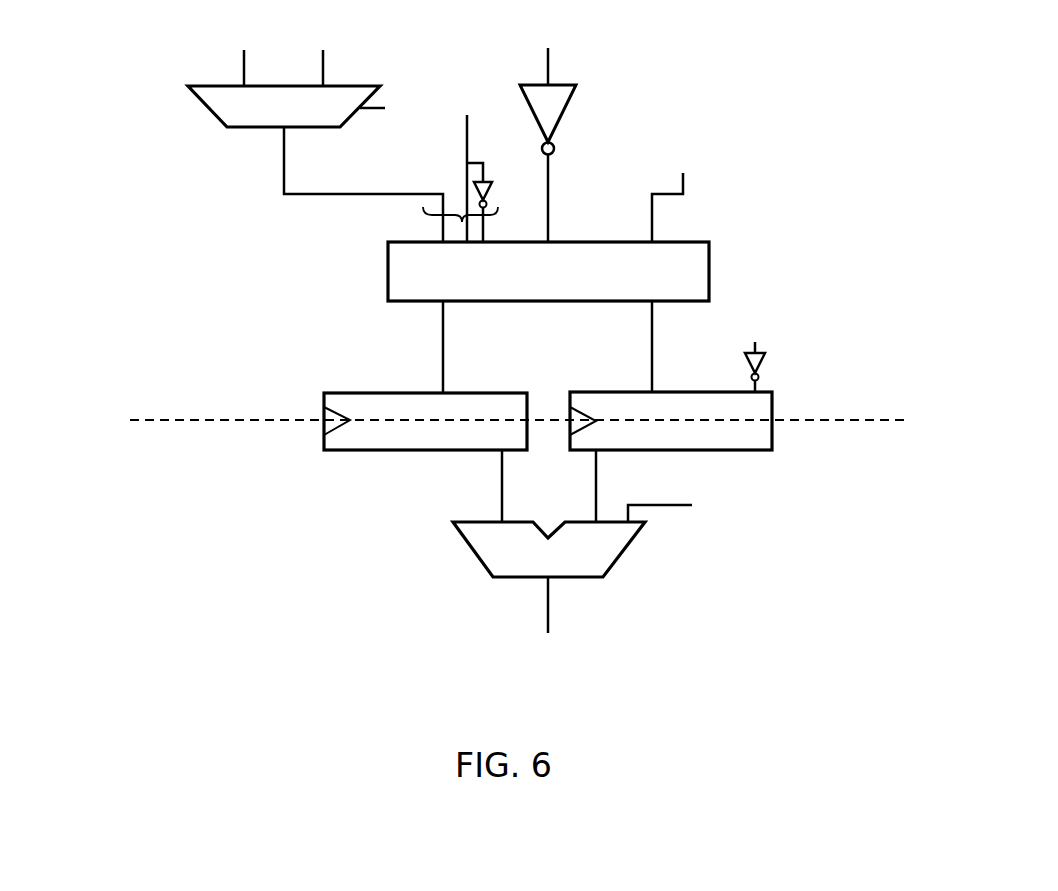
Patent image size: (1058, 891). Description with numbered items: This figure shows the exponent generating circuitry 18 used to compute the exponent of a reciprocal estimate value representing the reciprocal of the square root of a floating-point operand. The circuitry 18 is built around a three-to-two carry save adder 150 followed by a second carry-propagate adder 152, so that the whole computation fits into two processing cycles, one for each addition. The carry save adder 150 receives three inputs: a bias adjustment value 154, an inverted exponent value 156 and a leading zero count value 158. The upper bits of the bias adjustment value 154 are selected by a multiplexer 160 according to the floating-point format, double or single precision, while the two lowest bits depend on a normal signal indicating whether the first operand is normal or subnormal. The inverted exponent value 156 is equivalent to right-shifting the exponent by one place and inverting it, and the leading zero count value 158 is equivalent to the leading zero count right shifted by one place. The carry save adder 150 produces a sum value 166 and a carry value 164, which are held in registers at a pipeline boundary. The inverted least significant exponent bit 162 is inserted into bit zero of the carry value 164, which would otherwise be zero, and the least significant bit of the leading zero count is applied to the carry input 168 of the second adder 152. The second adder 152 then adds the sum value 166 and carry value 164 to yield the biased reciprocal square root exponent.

The exponent generating circuitry 18 is at (157, 477).
The multiplexer 160 is at (205, 109).
The bias adjustment value 154 is at (462, 222).
The inverted exponent value 156 is at (549, 221).
The leading zero count value 158 is at (652, 220).
The 3:2 carry save adder 150 is at (388, 275).
The sum value 166 is at (372, 451).
The carry value 164 is at (735, 451).
The inverted exponent bit zero 162 is at (760, 377).
The second carry-propagate adder 152 is at (470, 548).
The carry input 168 is at (668, 505).